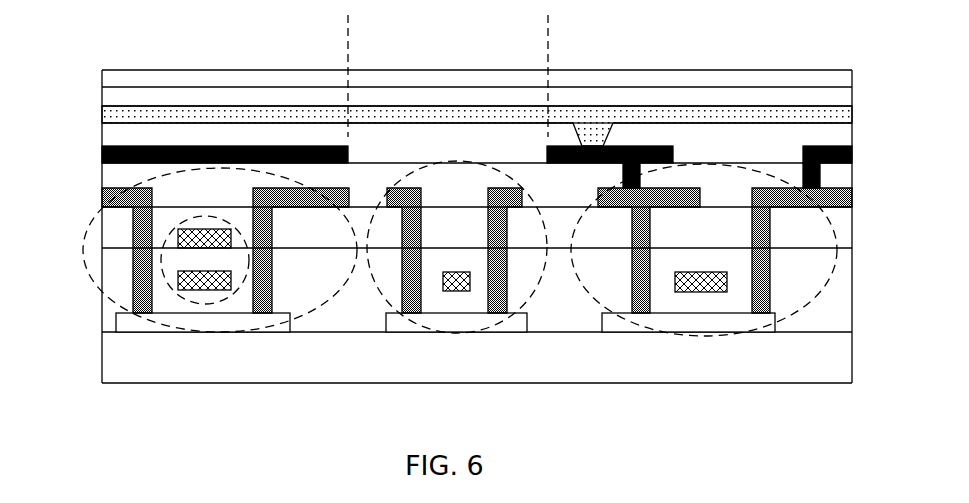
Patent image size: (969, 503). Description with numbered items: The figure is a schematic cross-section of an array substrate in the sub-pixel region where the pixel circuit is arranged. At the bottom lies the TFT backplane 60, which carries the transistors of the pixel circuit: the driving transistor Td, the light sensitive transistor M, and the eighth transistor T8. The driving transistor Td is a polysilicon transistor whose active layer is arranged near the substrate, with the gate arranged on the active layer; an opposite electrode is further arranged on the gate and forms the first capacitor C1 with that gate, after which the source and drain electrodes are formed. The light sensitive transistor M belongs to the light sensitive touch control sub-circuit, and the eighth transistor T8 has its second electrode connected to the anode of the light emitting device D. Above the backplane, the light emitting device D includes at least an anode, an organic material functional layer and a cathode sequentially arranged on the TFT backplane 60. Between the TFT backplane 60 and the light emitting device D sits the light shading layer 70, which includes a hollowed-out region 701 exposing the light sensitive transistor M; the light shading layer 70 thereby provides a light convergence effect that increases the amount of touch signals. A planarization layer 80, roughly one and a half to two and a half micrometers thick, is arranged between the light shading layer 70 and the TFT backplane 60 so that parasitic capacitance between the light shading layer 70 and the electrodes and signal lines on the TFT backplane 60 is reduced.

The hollowed-out region 701 is at (592, 28).
The light emitting device D is at (853, 70).
The light shading layer 70 is at (852, 152).
The planarization layer 80 is at (835, 175).
The TFT backplane 60 is at (853, 188).
The driving transistor Td is at (95, 285).
The first capacitor C1 is at (165, 282).
The light sensitive transistor M is at (380, 297).
The eighth transistor T8 is at (590, 297).